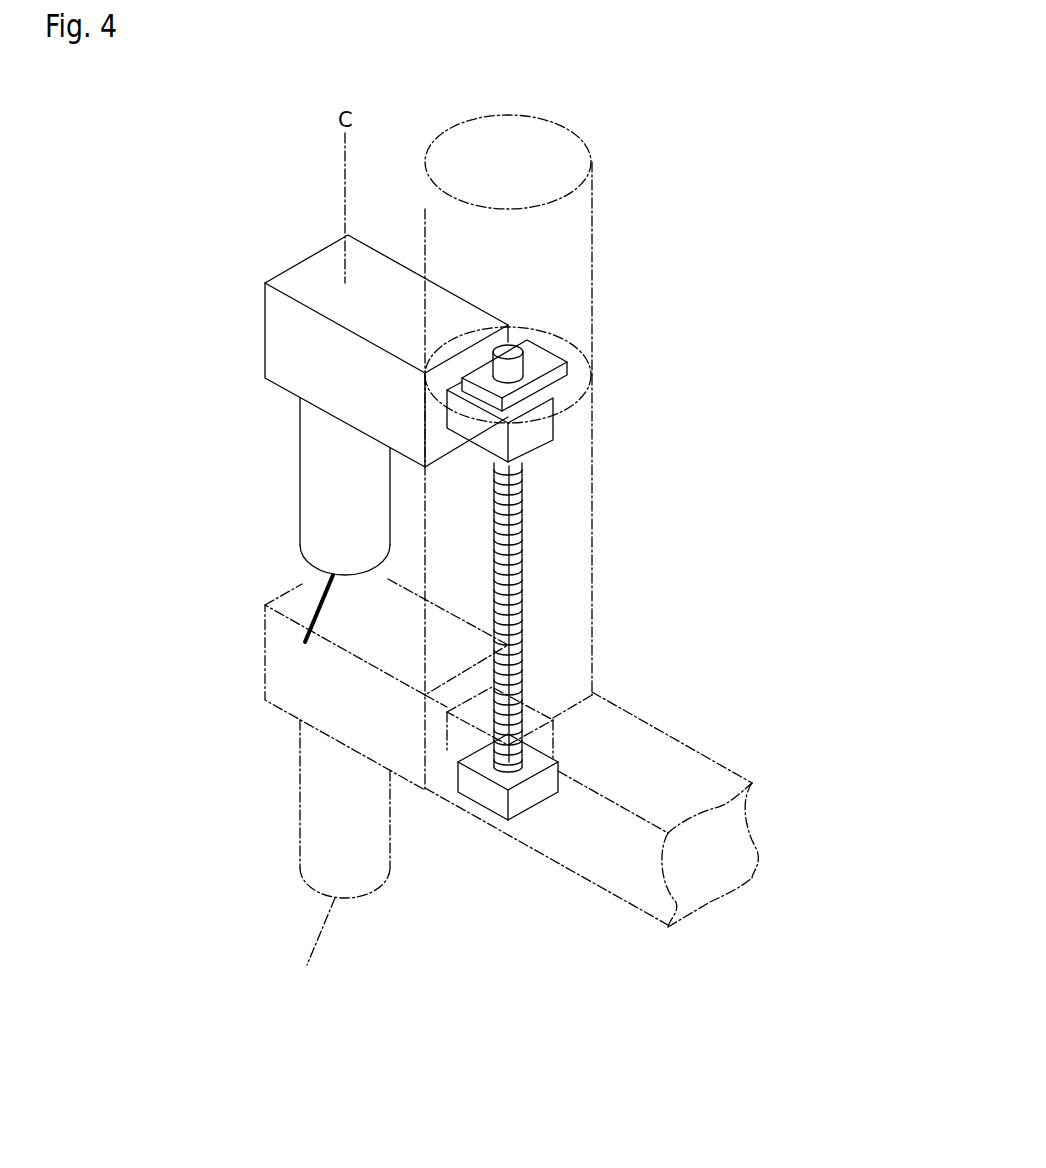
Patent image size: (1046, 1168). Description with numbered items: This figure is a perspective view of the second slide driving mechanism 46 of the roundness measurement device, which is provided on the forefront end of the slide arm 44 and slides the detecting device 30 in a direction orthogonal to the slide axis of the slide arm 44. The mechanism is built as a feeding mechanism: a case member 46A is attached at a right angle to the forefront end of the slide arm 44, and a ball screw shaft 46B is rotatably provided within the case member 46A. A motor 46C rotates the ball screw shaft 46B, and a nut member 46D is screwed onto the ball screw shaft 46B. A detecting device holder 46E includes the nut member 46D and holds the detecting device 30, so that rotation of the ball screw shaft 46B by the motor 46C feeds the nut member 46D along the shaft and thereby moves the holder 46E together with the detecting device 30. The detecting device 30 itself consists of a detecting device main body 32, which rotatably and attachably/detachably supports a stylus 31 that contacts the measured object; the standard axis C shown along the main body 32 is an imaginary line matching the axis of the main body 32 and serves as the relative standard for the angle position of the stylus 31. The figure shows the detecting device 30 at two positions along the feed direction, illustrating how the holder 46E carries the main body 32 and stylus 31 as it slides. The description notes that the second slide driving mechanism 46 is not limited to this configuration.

The detecting device 30 is at (205, 927).
The stylus 31 is at (320, 603).
The detecting device main body 32 is at (300, 515).
The slide arm 44 is at (721, 768).
The second slide driving mechanism 46 is at (663, 174).
The case member 46A is at (592, 495).
The ball screw shaft 46B is at (522, 568).
The motor 46C is at (592, 278).
The nut member 46D is at (548, 434).
The detecting device holder 46E is at (305, 273).